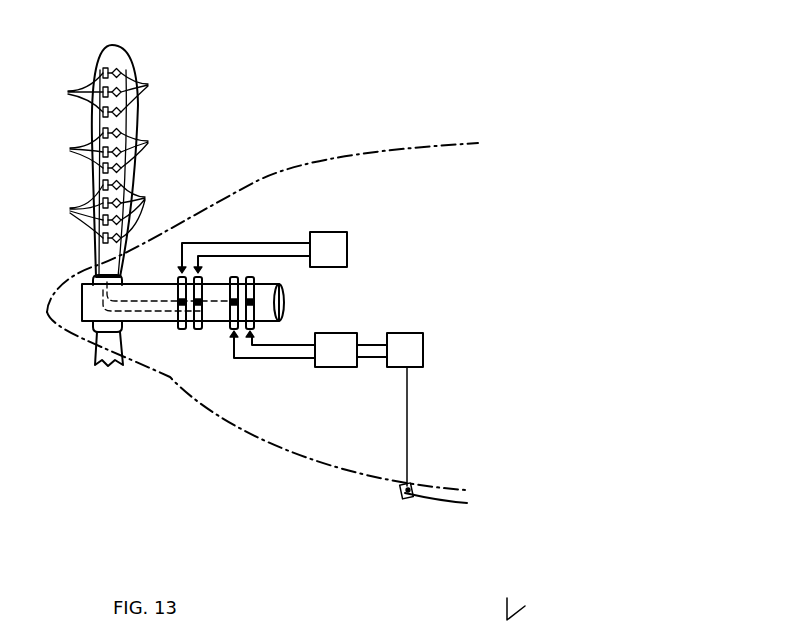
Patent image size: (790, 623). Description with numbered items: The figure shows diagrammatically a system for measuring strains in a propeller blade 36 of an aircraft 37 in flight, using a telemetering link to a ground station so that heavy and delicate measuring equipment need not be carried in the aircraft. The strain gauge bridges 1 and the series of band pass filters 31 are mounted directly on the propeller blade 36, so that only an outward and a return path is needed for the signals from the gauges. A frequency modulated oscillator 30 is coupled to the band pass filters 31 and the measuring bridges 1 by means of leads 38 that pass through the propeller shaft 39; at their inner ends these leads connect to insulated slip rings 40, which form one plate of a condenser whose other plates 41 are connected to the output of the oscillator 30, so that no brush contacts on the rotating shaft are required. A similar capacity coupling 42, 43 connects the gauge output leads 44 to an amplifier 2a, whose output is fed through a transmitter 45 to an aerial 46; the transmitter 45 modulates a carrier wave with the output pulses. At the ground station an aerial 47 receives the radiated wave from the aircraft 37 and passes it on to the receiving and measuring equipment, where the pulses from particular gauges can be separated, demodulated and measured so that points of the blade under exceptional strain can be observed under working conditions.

The strain gauge bridges 1 is at (132, 155).
The amplifier 2a is at (330, 338).
The frequency modulated oscillator 30 is at (326, 232).
The band pass filters 31 is at (76, 155).
The propeller blade 36 is at (110, 45).
The aircraft 37 is at (285, 452).
The leads 38 is at (145, 324).
The propeller shaft 39 is at (284, 305).
The insulated slip rings 40 is at (197, 331).
The condenser plates 41 is at (196, 266).
The capacity coupling 42 is at (250, 277).
The capacity coupling 43 is at (249, 339).
The gauge output leads 44 is at (127, 268).
The transmitter 45 is at (407, 333).
The aerial 46 is at (455, 504).
The aerial 47 is at (528, 609).